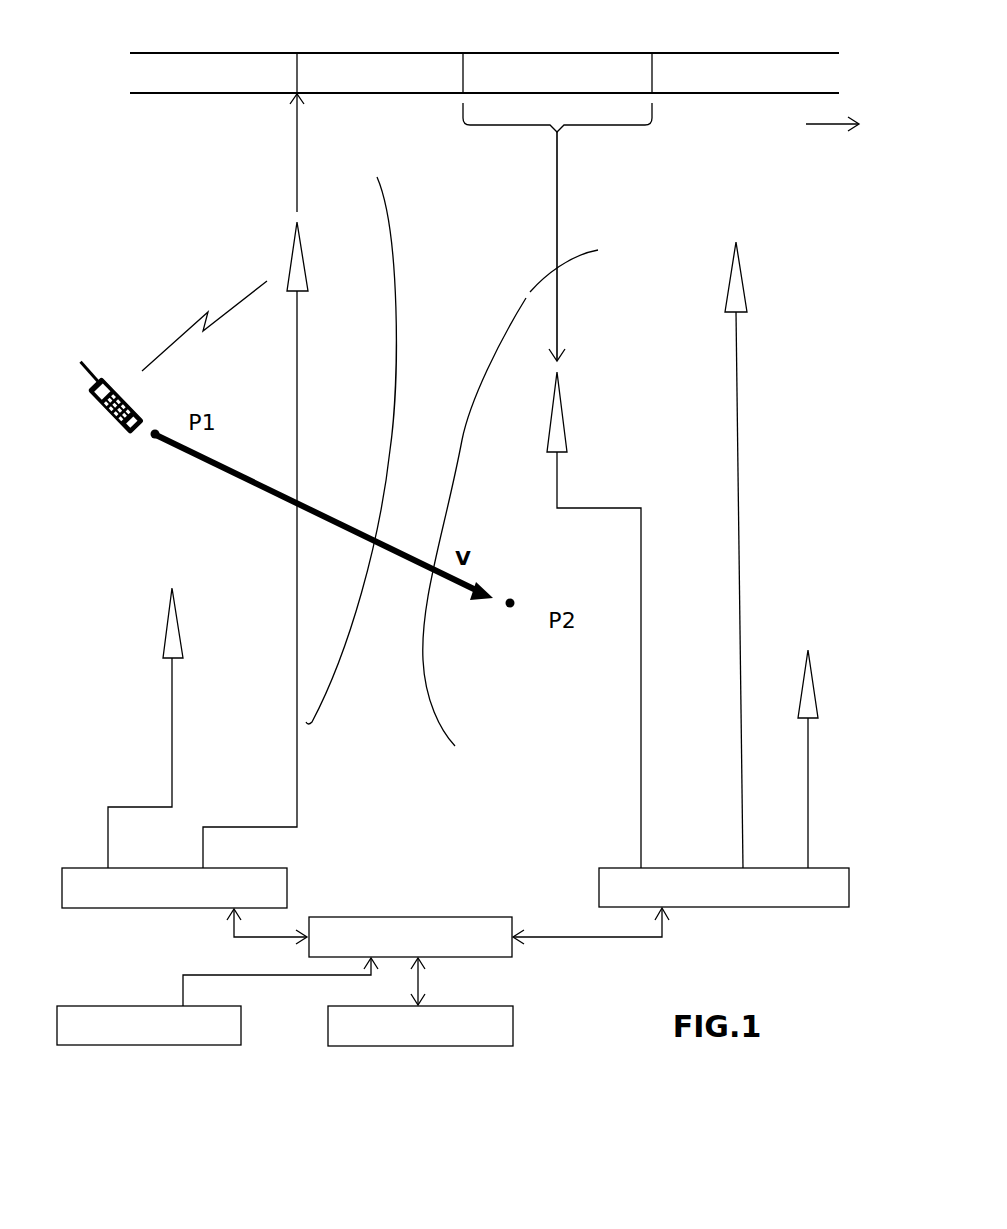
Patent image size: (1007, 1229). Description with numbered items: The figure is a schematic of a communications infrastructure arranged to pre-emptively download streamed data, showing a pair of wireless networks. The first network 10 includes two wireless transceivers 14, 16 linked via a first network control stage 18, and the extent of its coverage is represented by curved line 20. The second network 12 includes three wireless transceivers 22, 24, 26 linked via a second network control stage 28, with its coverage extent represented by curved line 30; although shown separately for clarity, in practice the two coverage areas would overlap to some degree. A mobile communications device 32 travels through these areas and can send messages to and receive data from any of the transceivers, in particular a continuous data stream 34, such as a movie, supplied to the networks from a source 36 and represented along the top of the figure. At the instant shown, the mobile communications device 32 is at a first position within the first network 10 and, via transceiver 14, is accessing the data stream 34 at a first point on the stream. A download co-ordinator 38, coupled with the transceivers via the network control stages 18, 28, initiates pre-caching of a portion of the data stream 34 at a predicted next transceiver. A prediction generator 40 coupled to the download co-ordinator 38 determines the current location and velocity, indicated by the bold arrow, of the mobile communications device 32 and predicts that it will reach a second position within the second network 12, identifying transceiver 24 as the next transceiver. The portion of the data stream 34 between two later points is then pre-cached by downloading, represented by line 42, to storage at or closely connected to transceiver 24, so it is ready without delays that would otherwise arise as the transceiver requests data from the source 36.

The first network 10 is at (171, 270).
The second network 12 is at (847, 400).
The wireless transceiver 14 is at (300, 280).
The wireless transceiver 16 is at (166, 650).
The first network control stage 18 is at (100, 876).
The curved line 20 is at (400, 246).
The wireless transceiver 22 is at (738, 292).
The wireless transceiver 24 is at (567, 425).
The wireless transceiver 26 is at (812, 702).
The second network control stage 28 is at (757, 907).
The curved line 30 is at (517, 311).
The mobile communications device 32 is at (95, 420).
The data stream 34 is at (718, 68).
The source 36 is at (73, 1040).
The download co-ordinator 38 is at (408, 913).
The prediction generator 40 is at (452, 1048).
The line representing downloading 42 is at (565, 220).